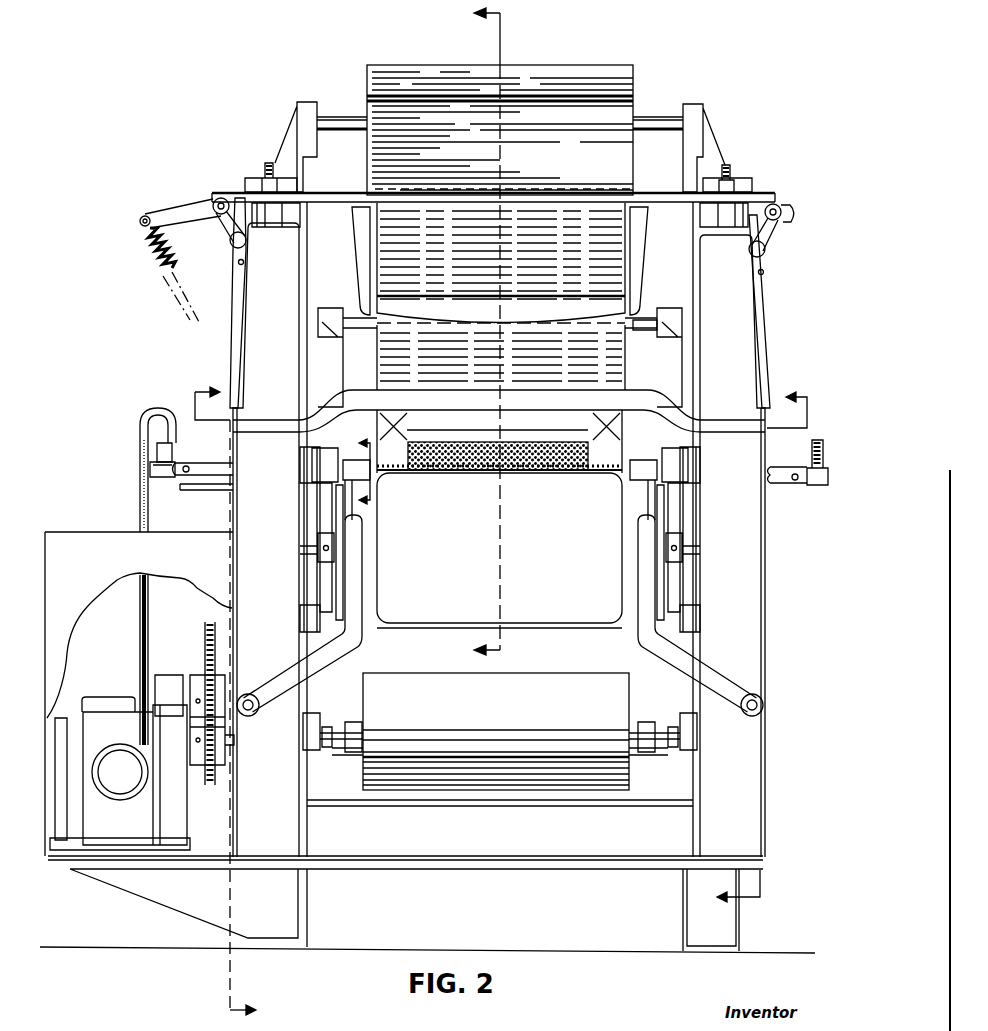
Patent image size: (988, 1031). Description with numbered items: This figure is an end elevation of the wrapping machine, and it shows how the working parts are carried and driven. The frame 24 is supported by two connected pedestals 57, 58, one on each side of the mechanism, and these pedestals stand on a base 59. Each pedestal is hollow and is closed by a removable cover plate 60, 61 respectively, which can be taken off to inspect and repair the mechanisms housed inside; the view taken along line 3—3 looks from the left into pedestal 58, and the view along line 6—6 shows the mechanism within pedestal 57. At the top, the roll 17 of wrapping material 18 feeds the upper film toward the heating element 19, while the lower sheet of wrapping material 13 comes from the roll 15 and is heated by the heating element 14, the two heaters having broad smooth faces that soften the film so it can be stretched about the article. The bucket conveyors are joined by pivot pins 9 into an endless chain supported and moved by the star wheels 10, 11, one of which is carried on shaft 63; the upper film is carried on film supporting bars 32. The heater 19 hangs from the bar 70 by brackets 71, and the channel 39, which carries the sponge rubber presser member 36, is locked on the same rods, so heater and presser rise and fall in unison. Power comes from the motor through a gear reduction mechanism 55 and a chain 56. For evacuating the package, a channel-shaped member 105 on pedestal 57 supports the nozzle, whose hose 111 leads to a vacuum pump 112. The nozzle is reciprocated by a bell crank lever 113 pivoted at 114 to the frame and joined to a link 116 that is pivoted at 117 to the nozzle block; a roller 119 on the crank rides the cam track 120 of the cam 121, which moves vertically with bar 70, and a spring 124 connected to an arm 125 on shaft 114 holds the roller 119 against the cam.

The roll 17 is at (607, 72).
The wrapping material 18 is at (382, 184).
The frame 24 is at (297, 116).
The bar 70 is at (655, 201).
The pivot 114 is at (222, 198).
The arm 125 is at (172, 210).
The spring 124 is at (175, 262).
The bell crank lever 113 is at (237, 280).
The roller 119 is at (236, 255).
The cam track 120 is at (244, 264).
The cam 121 is at (233, 321).
The pedestal 58 is at (247, 560).
The cover plate 61 is at (233, 510).
The pedestal 57 is at (743, 573).
The cover plate 60 is at (763, 603).
The channel 39 is at (590, 399).
The brackets 71 is at (374, 248).
The heating element 19 is at (547, 310).
The roll 15 is at (340, 345).
The film supporting bars 32 is at (648, 320).
The pivot pins 9 is at (381, 473).
The presser member 36 is at (585, 461).
The heating element 14 is at (402, 602).
The shaft 63 is at (305, 542).
The star wheel 10 is at (323, 587).
The wrapping material 13 is at (358, 660).
The hose 111 is at (138, 484).
The pivot 117 is at (181, 473).
The link 116 is at (202, 463).
The channel-shaped member 105 is at (202, 489).
The gear reduction mechanism 55 is at (112, 705).
The vacuum pump 112 is at (117, 788).
The chain 56 is at (207, 628).
The base 59 is at (492, 863).
The line 3— 3 is at (225, 701).
The line 6— 6 is at (758, 648).
The star wheel 11 is at (362, 463).